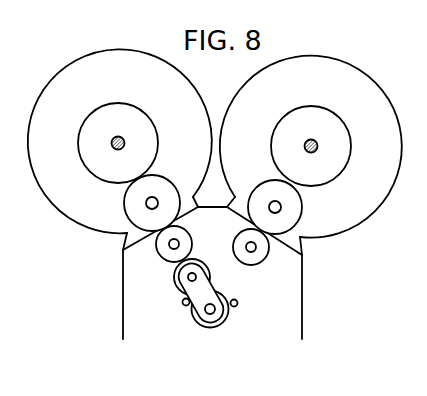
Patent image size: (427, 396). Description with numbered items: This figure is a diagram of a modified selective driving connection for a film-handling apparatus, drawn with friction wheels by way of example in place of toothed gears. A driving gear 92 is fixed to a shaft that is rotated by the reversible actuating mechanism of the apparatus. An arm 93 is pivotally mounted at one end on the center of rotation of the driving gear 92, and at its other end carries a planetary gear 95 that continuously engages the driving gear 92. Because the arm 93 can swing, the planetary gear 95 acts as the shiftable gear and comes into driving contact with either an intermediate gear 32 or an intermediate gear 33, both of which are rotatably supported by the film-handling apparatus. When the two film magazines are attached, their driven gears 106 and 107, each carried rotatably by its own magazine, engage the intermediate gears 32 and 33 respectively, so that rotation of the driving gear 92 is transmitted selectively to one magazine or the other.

The driven gear 107 is at (165, 178).
The driven gear 106 is at (260, 184).
The intermediate gear 33 is at (163, 258).
The intermediate gear 32 is at (263, 261).
The planetary gear 95 is at (201, 261).
The arm 93 is at (214, 284).
The driving gear 92 is at (222, 323).